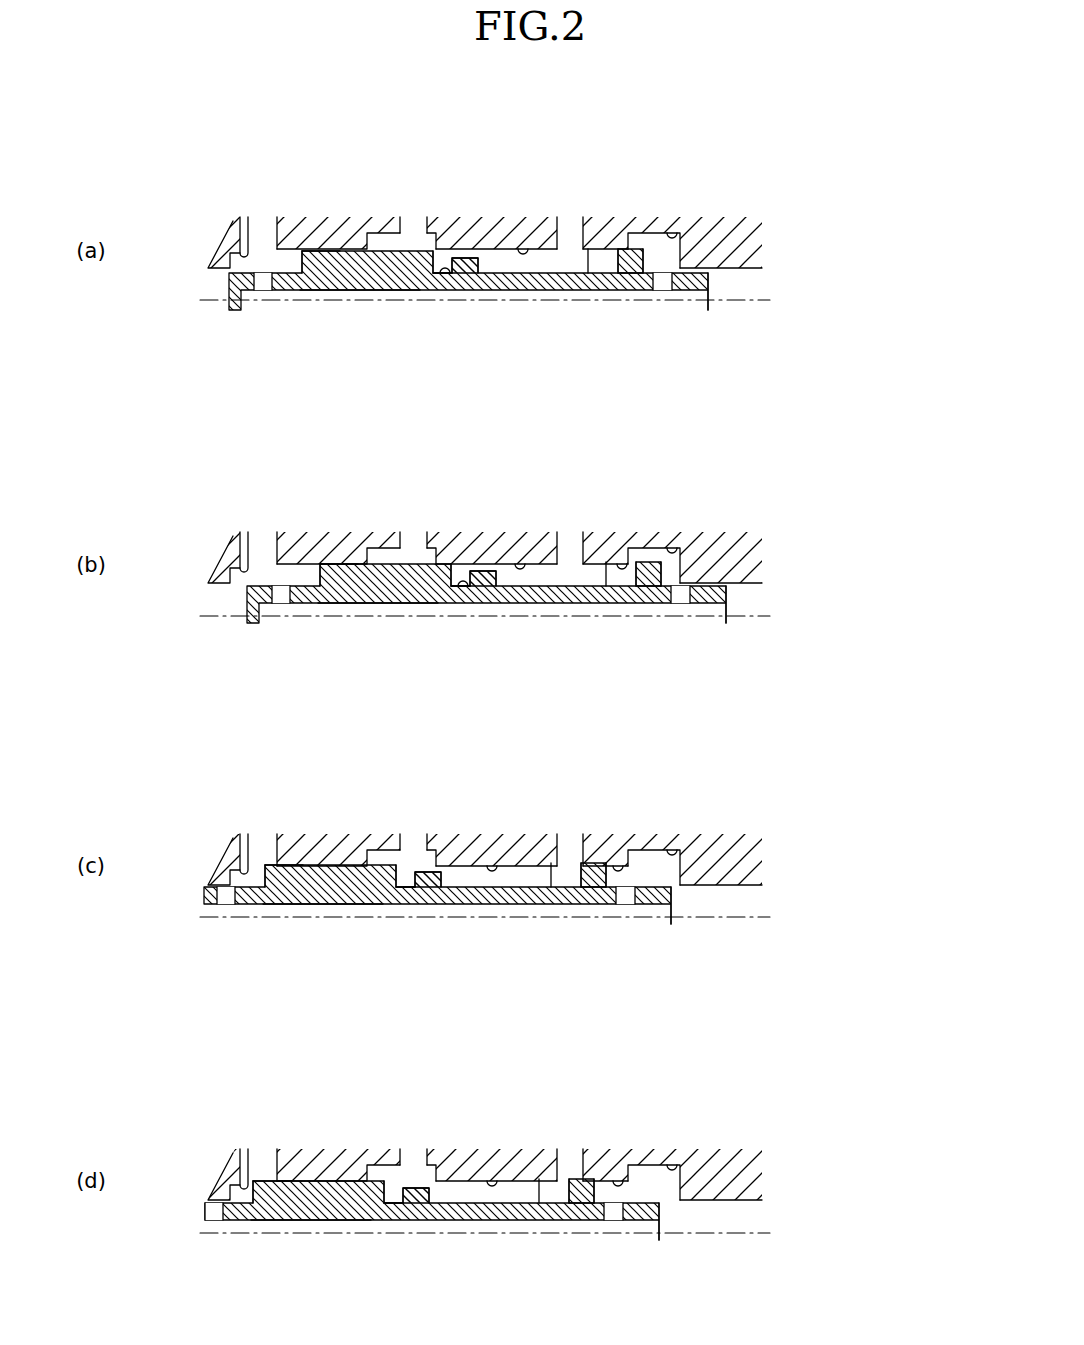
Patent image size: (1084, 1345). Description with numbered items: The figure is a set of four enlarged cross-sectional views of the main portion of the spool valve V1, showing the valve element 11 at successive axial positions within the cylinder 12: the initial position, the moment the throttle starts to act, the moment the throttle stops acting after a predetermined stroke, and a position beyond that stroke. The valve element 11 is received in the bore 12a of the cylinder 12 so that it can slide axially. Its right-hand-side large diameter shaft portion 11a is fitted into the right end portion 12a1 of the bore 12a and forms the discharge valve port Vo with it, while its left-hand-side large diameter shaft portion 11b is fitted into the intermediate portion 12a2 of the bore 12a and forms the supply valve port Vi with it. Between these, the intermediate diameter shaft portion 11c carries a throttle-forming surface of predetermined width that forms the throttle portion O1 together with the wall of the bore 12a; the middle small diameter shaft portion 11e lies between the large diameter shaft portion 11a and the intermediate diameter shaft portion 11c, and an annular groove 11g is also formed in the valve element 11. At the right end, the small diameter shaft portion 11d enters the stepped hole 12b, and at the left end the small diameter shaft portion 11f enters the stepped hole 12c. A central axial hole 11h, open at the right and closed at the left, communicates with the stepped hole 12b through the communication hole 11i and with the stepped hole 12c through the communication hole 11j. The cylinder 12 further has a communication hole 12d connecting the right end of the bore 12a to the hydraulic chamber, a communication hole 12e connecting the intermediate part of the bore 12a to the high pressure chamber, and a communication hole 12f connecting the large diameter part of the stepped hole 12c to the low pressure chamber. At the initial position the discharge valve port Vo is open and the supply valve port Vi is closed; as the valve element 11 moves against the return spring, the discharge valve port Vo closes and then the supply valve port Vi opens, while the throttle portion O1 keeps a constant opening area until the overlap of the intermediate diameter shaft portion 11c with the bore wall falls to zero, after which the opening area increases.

The valve element 11 is at (572, 292).
The right-hand-side large diameter shaft portion 11a is at (643, 262).
The left-hand-side large diameter shaft portion 11b is at (392, 256).
The intermediate diameter shaft portion 11c is at (465, 263).
The right-hand-side small diameter shaft portion 11d is at (700, 262).
The middle small diameter shaft portion 11e is at (600, 262).
The left-hand-side small diameter shaft portion 11f is at (302, 243).
The annular groove 11g is at (443, 282).
The axial hole 11h is at (335, 291).
The right-hand-side communication hole 11i is at (663, 291).
The left-hand-side communication hole 11j is at (263, 289).
The cylinder 12 is at (222, 238).
The bore 12a is at (523, 246).
The right end portion of the bore 12a1 is at (628, 262).
The intermediate portion of the bore 12a2 is at (432, 243).
The right-hand-side stepped hole 12b is at (692, 240).
The left-hand-side stepped hole 12c is at (244, 240).
The communication hole 12d is at (570, 226).
The communication hole 12e is at (413, 226).
The communication hole 12f is at (265, 232).
The throttle portion O1 is at (458, 284).
The supply valve port Vi is at (443, 262).
The discharge valve port Vo is at (672, 240).
The spool valve V1 is at (741, 296).